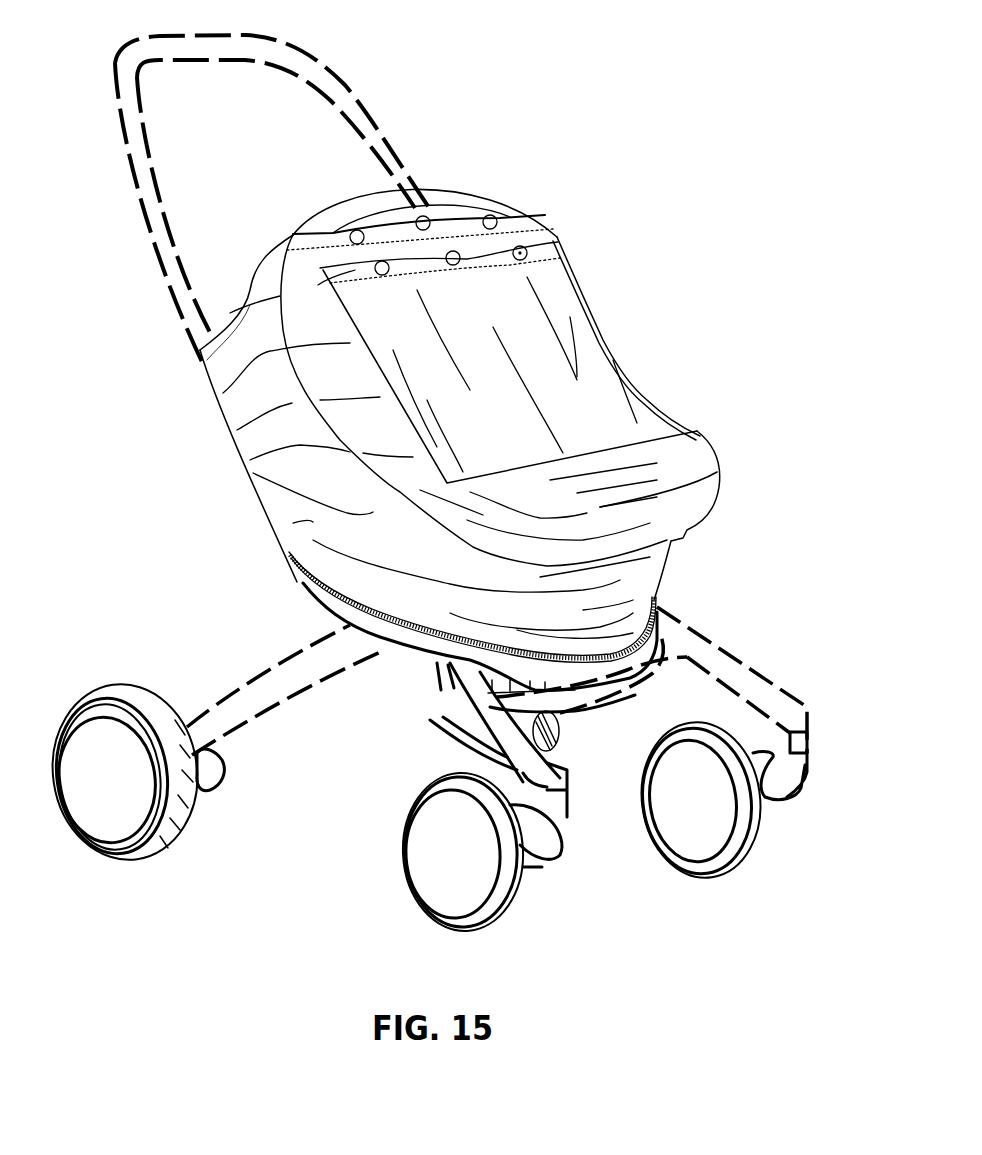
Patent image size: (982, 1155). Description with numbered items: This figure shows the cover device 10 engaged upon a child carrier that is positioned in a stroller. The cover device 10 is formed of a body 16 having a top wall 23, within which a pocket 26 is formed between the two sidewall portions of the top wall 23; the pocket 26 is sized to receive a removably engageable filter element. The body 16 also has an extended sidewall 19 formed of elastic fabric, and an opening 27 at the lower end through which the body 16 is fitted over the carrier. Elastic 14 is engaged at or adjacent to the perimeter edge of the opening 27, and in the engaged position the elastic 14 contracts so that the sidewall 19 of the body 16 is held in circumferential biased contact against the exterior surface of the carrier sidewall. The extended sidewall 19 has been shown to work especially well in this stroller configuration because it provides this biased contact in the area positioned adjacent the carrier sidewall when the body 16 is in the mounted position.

The cover device 10 is at (430, 484).
The elastic 14 is at (372, 596).
The body 16 is at (213, 364).
The sidewall 19 is at (464, 471).
The top wall 23 is at (537, 240).
The pocket 26 is at (322, 268).
The opening 27 is at (383, 597).